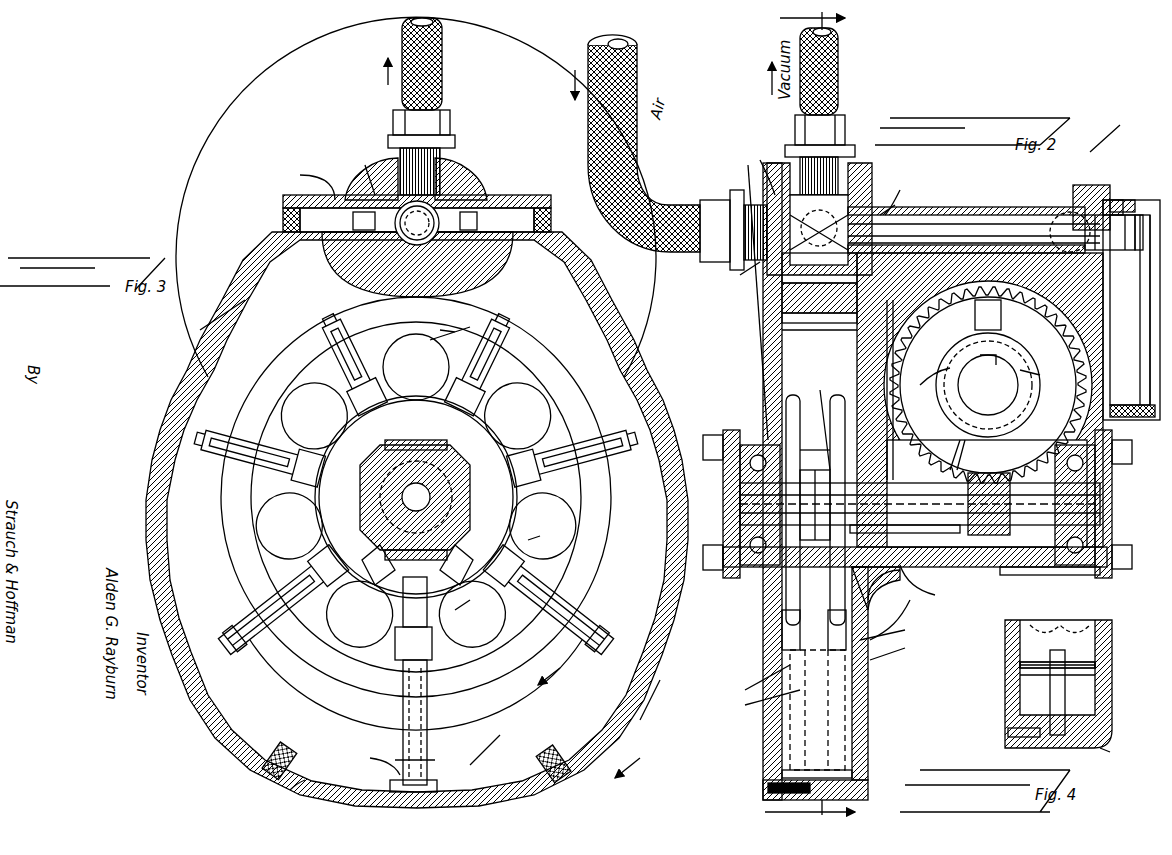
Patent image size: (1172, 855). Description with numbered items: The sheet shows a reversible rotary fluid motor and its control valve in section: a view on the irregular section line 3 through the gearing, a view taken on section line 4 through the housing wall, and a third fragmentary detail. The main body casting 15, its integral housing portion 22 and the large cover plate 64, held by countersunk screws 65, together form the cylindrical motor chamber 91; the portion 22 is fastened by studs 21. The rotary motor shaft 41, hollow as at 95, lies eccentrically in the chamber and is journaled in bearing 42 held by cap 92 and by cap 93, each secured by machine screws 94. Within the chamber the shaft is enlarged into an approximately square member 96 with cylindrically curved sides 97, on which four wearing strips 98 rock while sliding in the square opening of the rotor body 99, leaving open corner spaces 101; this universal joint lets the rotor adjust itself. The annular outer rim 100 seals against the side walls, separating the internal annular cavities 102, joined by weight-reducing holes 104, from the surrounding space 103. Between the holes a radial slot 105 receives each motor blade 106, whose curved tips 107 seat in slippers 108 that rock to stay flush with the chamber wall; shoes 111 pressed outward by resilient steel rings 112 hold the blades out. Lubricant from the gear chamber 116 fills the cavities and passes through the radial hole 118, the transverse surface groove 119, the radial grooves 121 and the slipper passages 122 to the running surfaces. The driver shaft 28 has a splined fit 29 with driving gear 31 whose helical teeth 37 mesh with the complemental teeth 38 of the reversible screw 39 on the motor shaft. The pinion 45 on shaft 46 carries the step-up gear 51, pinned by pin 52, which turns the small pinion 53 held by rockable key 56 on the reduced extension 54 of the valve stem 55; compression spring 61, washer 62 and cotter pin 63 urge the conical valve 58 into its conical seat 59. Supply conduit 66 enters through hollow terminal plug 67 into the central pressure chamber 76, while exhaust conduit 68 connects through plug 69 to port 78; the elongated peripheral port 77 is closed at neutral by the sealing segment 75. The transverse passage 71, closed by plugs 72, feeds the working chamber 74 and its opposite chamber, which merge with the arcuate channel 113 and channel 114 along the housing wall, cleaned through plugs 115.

In FIG. 2, the section line 3— 3 is at (816, 414).
In FIG. 3, the section line 4— 4 is at (580, 726).
In FIG. 3, the main body casting 15 is at (309, 177).
In FIG. 2, the main body casting 15 is at (965, 215).
In FIG. 2, the studs 21 is at (955, 415).
In FIG. 3, the portion of motor housing 22 is at (485, 743).
In FIG. 2, the portion of motor housing 22 is at (860, 720).
In FIG. 4, the portion of motor housing 22 is at (1115, 690).
In FIG. 2, the driver (power) shaft 28 is at (1010, 378).
In FIG. 2, the splined fit 29 is at (945, 400).
In FIG. 2, the driving gear 31 is at (965, 455).
In FIG. 2, the helical teeth 37 is at (1000, 473).
In FIG. 2, the complemental teeth 38 is at (1010, 570).
In FIG. 2, the reversible screw 39 is at (945, 575).
In FIG. 3, the rotary motor shaft 41 is at (400, 545).
In FIG. 2, the rotary motor shaft 41 is at (920, 504).
In FIG. 2, the bearing 42 is at (763, 590).
In FIG. 2, the pinion 45 is at (1118, 522).
In FIG. 2, the shaft 46 is at (994, 374).
In FIG. 2, the step-up gear 51 is at (1050, 220).
In FIG. 2, the pin 52 is at (1120, 272).
In FIG. 2, the small pinion 53 is at (1097, 185).
In FIG. 2, the reduced extension of valve stem 54 is at (1122, 200).
In FIG. 2, the rotatable valve stem 55 is at (990, 215).
In FIG. 2, the rockable key 56 is at (1070, 210).
In FIG. 2, the oscillatable conical valve 58 is at (782, 290).
In FIG. 2, the conical seat 59 is at (898, 192).
In FIG. 2, the compression spring 61 is at (1140, 215).
In FIG. 2, the washer 62 is at (1043, 383).
In FIG. 2, the cotter pin 63 is at (1015, 345).
In FIG. 2, the large cover plate 64 is at (770, 378).
In FIG. 4, the large cover plate 64 is at (1005, 685).
In FIG. 2, the countersunk screws 65 is at (768, 788).
In FIG. 2, the fluid supply conduit 66 is at (645, 190).
In FIG. 2, the hollow terminal plug 67 is at (715, 200).
In FIG. 3, the exhaust conduit 68 is at (442, 80).
In FIG. 2, the exhaust conduit 68 is at (838, 85).
In FIG. 3, the plug (exhaust nipple) 69 is at (450, 125).
In FIG. 2, the plug (exhaust nipple) 69 is at (795, 130).
In FIG. 3, the passage 71 is at (360, 238).
In FIG. 2, the passage 71 is at (730, 267).
In FIG. 3, the plugs 72 is at (470, 210).
In FIG. 3, the chamber 74 is at (585, 320).
In FIG. 3, the sealing segment 75 is at (310, 280).
In FIG. 3, the central pressure chamber 76 is at (455, 195).
In FIG. 2, the central pressure chamber 76 is at (775, 195).
In FIG. 3, the elongated peripheral port 77 is at (417, 223).
In FIG. 2, the elongated peripheral port 77 is at (896, 200).
In FIG. 3, the port 78 is at (360, 169).
In FIG. 2, the port 78 is at (756, 169).
In FIG. 3, the cylindrical motor chamber 91 is at (295, 794).
In FIG. 2, the cap 92 is at (723, 483).
In FIG. 2, the cap 93 is at (1112, 497).
In FIG. 2, the machine screws 94 is at (1125, 462).
In FIG. 3, the hollow of motor shaft 95 is at (470, 518).
In FIG. 2, the hollow of motor shaft 95 is at (894, 614).
In FIG. 3, the approximately square member 96 is at (450, 562).
In FIG. 2, the approximately square member 96 is at (840, 515).
In FIG. 2, the cylindrically curved sides 97 is at (905, 537).
In FIG. 3, the wearing strips 98 is at (372, 632).
In FIG. 2, the wearing strips 98 is at (782, 615).
In FIG. 3, the rotor body 99 is at (537, 533).
In FIG. 2, the rotor body 99 is at (828, 620).
In FIG. 2, the annular outer rim 100 is at (785, 330).
In FIG. 3, the open corner spaces 101 is at (545, 545).
In FIG. 3, the internal annular cavities 102 is at (270, 585).
In FIG. 2, the internal annular cavities 102 is at (925, 382).
In FIG. 3, the space surrounding rotor rim 103 is at (450, 329).
In FIG. 3, the holes 104 is at (449, 496).
In FIG. 2, the holes 104 is at (790, 350).
In FIG. 3, the radial slot 105 is at (456, 602).
In FIG. 2, the radial slot 105 is at (800, 640).
In FIG. 3, the motor blade (vane) 106 is at (370, 712).
In FIG. 2, the motor blade (vane) 106 is at (860, 680).
In FIG. 4, the motor blade (vane) 106 is at (1078, 620).
In FIG. 3, the cylindrically curved tips 107 is at (280, 660).
In FIG. 3, the slippers 108 is at (440, 758).
In FIG. 2, the slippers 108 is at (1020, 664).
In FIG. 4, the slippers 108 is at (1020, 664).
In FIG. 3, the shoes 111 is at (432, 650).
In FIG. 2, the shoes 111 is at (740, 393).
In FIG. 3, the resilient steel rings 112 is at (320, 528).
In FIG. 2, the resilient steel rings 112 is at (892, 629).
In FIG. 3, the arcuate channel 113 is at (205, 342).
In FIG. 3, the channel 114 is at (649, 704).
In FIG. 4, the channel 114 is at (1118, 755).
In FIG. 3, the plugs 115 is at (260, 772).
In FIG. 3, the gear chamber 116 is at (545, 790).
In FIG. 2, the gear chamber 116 is at (1050, 581).
In FIG. 3, the radially extending hole 118 is at (403, 722).
In FIG. 2, the radially extending hole 118 is at (750, 701).
In FIG. 3, the transverse surface groove 119 is at (365, 760).
In FIG. 3, the radial grooves 121 is at (540, 672).
In FIG. 2, the radial grooves 121 is at (897, 648).
In FIG. 3, the short radial passages 122 is at (430, 775).
In FIG. 4, the short radial passages 122 is at (1108, 712).